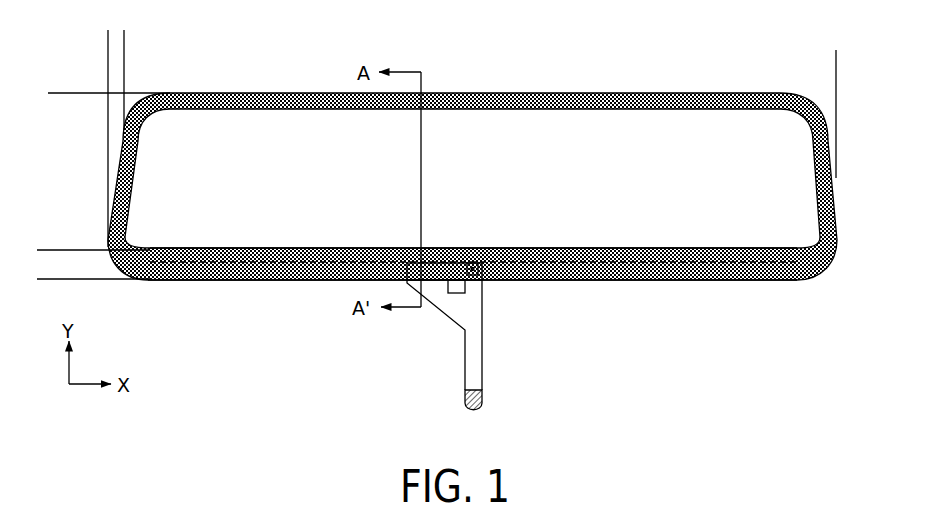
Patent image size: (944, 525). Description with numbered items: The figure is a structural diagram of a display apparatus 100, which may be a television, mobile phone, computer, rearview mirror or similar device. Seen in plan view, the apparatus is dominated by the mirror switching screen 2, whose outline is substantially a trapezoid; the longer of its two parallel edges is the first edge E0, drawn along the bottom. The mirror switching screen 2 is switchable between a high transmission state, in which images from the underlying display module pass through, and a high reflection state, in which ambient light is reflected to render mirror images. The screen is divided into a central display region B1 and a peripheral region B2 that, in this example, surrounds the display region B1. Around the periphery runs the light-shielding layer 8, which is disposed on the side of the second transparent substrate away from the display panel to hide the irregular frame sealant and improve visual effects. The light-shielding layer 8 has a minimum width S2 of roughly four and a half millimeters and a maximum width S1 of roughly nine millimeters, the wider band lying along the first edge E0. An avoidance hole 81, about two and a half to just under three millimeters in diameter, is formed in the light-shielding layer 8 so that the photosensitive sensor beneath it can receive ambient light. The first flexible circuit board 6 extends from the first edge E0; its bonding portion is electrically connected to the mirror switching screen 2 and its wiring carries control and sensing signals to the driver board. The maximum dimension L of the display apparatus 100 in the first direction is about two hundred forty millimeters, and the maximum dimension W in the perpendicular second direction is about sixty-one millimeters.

The display apparatus 100 is at (60, 24).
The mirror switching screen 2 is at (768, 178).
The light-shielding layer 8 is at (197, 268).
The first flexible circuit board 6 is at (468, 313).
The avoidance hole 81 is at (482, 278).
The display region B1 is at (269, 132).
The peripheral region B2 is at (659, 271).
The first edge E0 is at (732, 283).
The maximum width of the light-shielding layer S1 is at (50, 332).
The minimum width of the light-shielding layer S2 is at (165, 41).
The maximum dimension in the first direction L is at (835, 60).
The maximum dimension in the second direction W is at (88, 278).